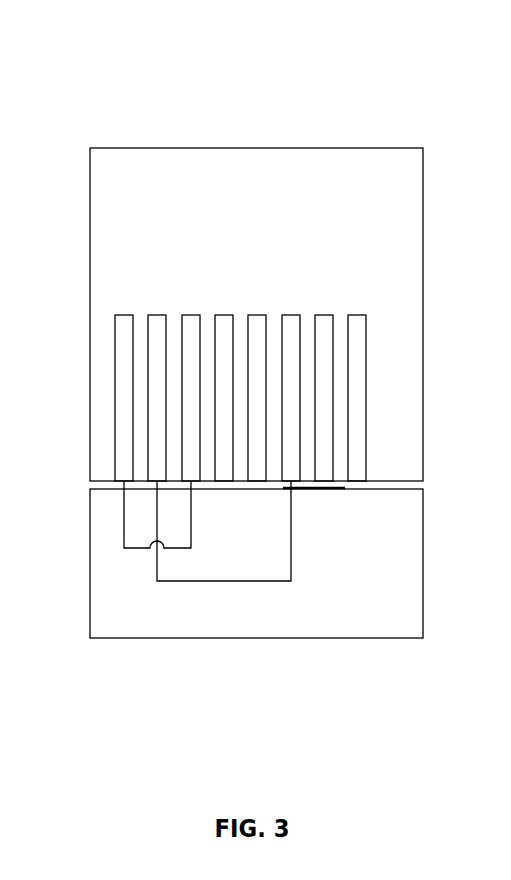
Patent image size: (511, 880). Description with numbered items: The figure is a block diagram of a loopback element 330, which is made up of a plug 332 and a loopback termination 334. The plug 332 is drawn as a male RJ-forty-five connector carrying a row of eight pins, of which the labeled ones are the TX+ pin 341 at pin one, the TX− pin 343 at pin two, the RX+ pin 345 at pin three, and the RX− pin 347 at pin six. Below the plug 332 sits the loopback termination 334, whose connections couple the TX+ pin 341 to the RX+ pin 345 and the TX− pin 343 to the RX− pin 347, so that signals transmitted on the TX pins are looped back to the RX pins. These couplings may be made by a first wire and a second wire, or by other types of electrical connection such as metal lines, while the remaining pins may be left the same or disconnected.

The loopback element 330 is at (267, 76).
The plug 332 is at (423, 295).
The loopback termination 334 is at (423, 573).
The TX+ pin 341 is at (123, 345).
The TX− pin 343 is at (158, 369).
The RX+ pin 345 is at (190, 395).
The RX− pin 347 is at (292, 442).